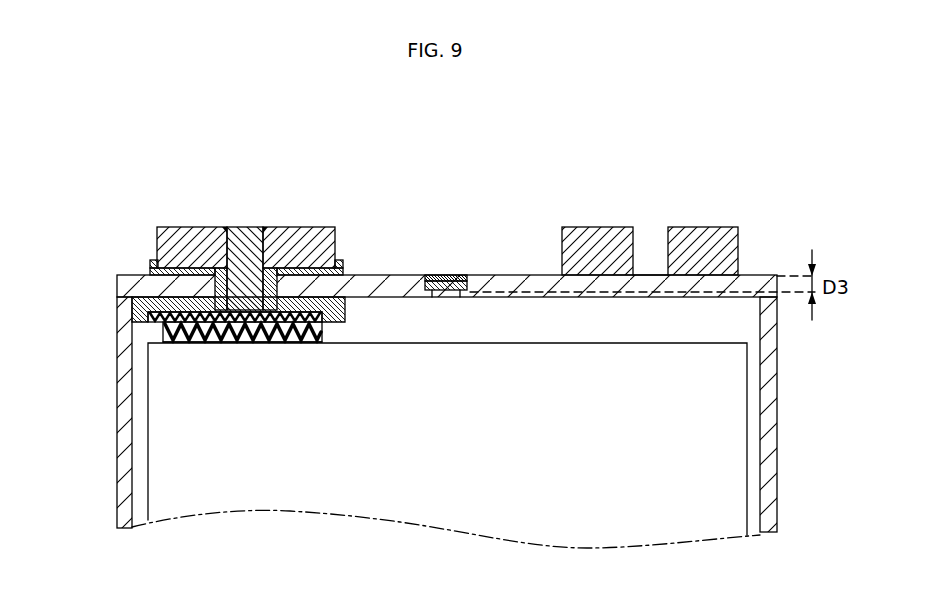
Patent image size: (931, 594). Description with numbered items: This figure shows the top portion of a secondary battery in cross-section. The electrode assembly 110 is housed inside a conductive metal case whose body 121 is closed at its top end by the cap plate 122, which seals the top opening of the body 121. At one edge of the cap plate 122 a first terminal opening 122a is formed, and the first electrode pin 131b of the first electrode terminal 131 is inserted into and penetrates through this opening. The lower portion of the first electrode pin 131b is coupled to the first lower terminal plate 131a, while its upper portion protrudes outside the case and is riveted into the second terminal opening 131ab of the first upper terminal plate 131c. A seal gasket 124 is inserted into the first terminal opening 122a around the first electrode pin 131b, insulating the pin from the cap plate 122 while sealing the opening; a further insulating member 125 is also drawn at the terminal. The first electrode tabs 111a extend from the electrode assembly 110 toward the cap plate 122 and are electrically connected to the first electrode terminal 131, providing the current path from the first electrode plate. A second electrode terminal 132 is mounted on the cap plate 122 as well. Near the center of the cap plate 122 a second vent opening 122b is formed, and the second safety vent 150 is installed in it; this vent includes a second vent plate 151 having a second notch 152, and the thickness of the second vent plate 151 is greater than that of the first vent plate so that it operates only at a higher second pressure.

The electrode assembly 110 is at (443, 422).
The body 121 is at (770, 400).
The cap plate 122 is at (755, 284).
The first terminal opening 122a is at (257, 343).
The second vent opening 122b is at (432, 275).
The seal gasket 124 is at (258, 253).
The insulating flange member 125 is at (150, 264).
The first electrode terminal 131 is at (258, 223).
The first lower terminal plate 131a is at (317, 224).
The first electrode pin 131b is at (248, 232).
The first upper terminal plate 131c is at (200, 233).
The second terminal opening 131ab is at (216, 346).
The first electrode tabs 111a is at (162, 332).
The second safety vent 150 is at (475, 231).
The second vent plate 151 is at (435, 216).
The second notch 152 is at (440, 276).
The second electrode terminal 132 is at (700, 232).